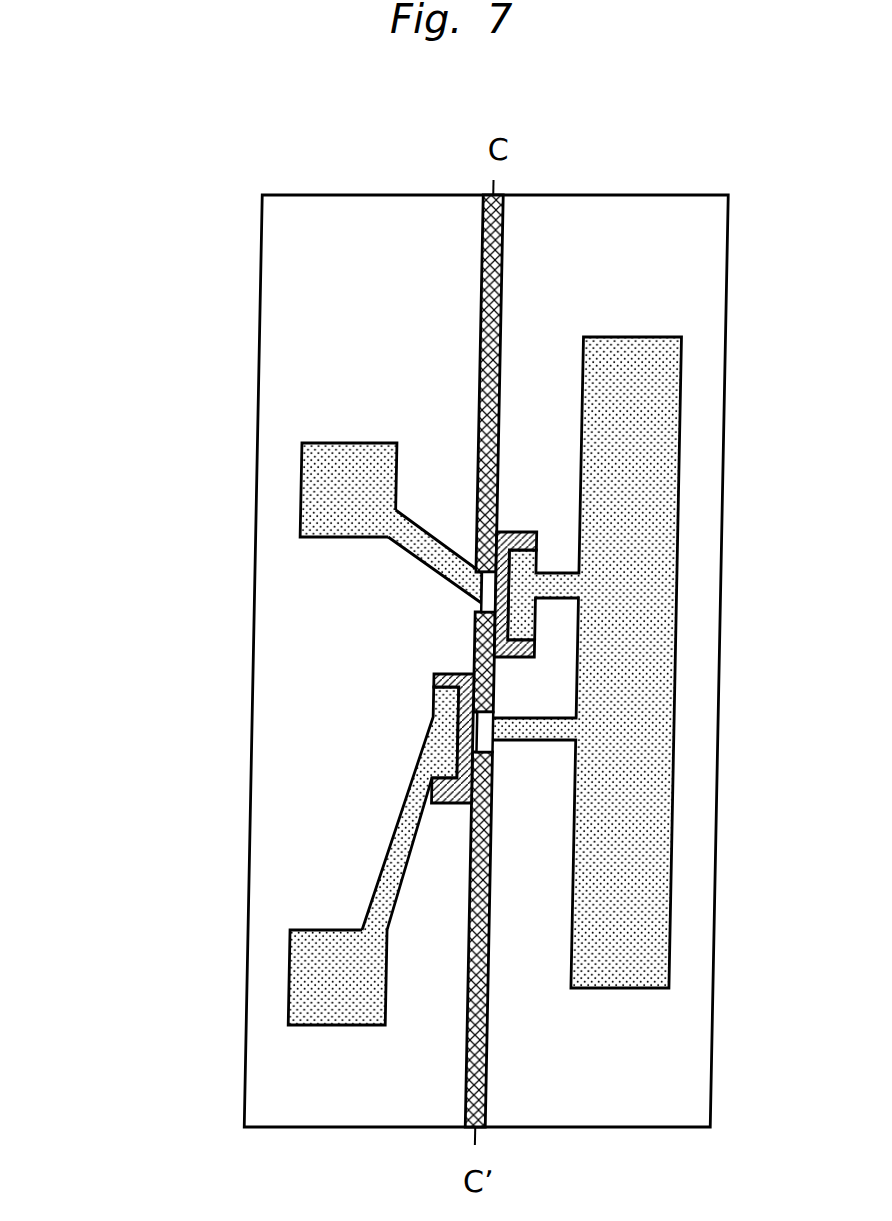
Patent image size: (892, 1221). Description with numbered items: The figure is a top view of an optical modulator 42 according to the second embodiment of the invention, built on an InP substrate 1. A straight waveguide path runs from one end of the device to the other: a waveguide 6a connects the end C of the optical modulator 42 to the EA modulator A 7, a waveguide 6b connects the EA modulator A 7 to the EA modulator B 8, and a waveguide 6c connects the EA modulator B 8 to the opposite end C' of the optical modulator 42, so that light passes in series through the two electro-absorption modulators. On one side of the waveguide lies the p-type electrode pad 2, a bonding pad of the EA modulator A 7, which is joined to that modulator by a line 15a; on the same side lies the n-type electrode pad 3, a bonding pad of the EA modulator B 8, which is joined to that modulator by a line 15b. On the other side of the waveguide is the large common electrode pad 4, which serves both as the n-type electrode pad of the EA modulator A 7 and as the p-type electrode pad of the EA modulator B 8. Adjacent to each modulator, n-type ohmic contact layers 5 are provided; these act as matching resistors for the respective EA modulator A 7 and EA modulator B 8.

The InP substrate 1 is at (266, 315).
The p-type electrode pad 2 is at (336, 481).
The n-type electrode pad 3 is at (337, 977).
The common electrode pad 4 is at (645, 653).
The n-type ohmic contact layer 5 is at (527, 532).
The waveguide 6a is at (508, 256).
The waveguide 6b is at (508, 692).
The waveguide 6c is at (508, 913).
The EA modulator A 7 is at (486, 597).
The EA modulator B 8 is at (509, 743).
The line 15a is at (425, 538).
The line 15b is at (424, 832).
The optical modulator 42 is at (172, 131).